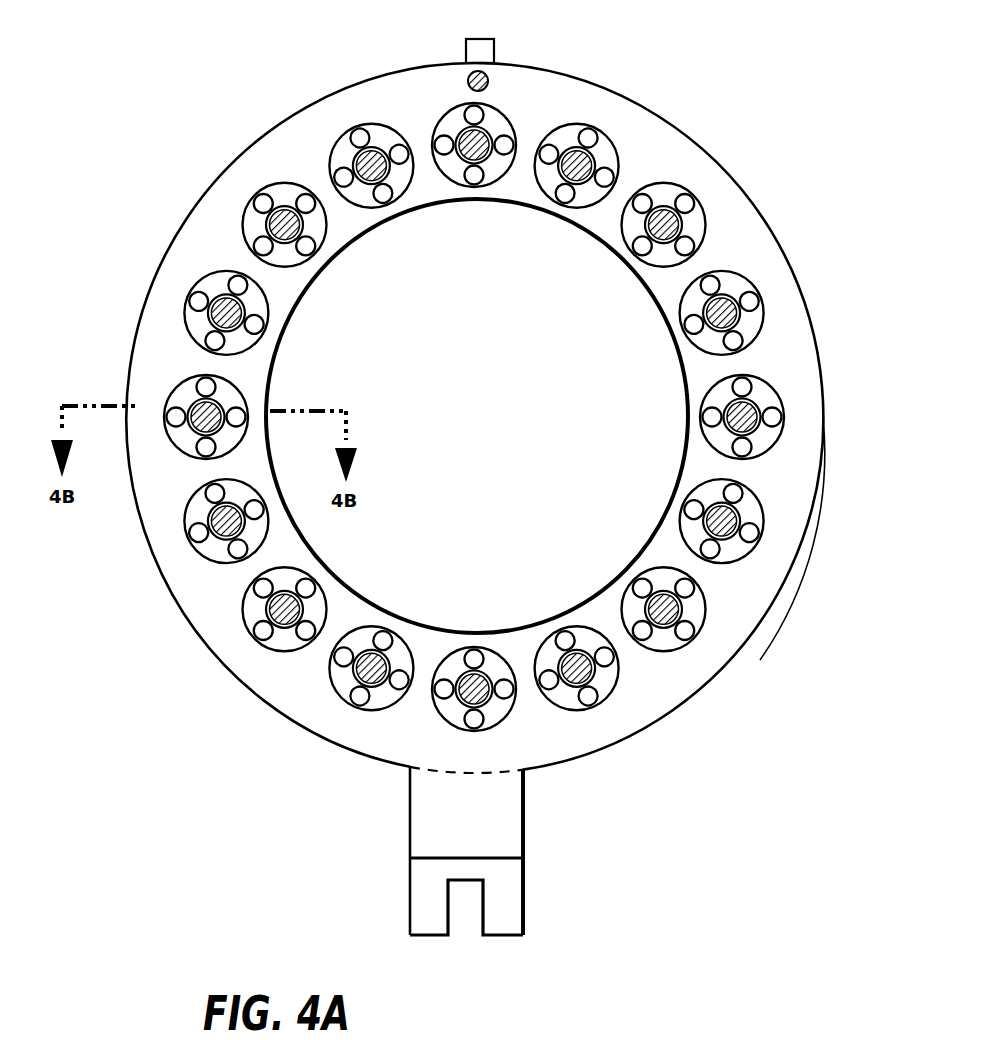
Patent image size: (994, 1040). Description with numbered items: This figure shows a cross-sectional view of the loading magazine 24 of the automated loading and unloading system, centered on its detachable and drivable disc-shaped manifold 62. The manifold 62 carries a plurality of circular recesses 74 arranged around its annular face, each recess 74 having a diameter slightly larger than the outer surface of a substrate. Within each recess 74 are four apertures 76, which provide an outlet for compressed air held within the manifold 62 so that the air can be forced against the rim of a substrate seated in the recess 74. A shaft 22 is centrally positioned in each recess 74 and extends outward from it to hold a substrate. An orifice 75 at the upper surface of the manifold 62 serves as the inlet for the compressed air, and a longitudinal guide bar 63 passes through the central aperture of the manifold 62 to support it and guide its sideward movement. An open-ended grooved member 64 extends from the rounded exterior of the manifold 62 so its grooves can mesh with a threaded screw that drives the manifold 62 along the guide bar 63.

The loading magazine 24 is at (350, 60).
The shaft 22 is at (275, 213).
The circular recess 74 is at (256, 200).
The apertures 76 is at (305, 196).
The guide bar 63 is at (476, 78).
The orifice 75 is at (490, 50).
The manifold 62 is at (343, 733).
The grooved member 64 is at (512, 897).